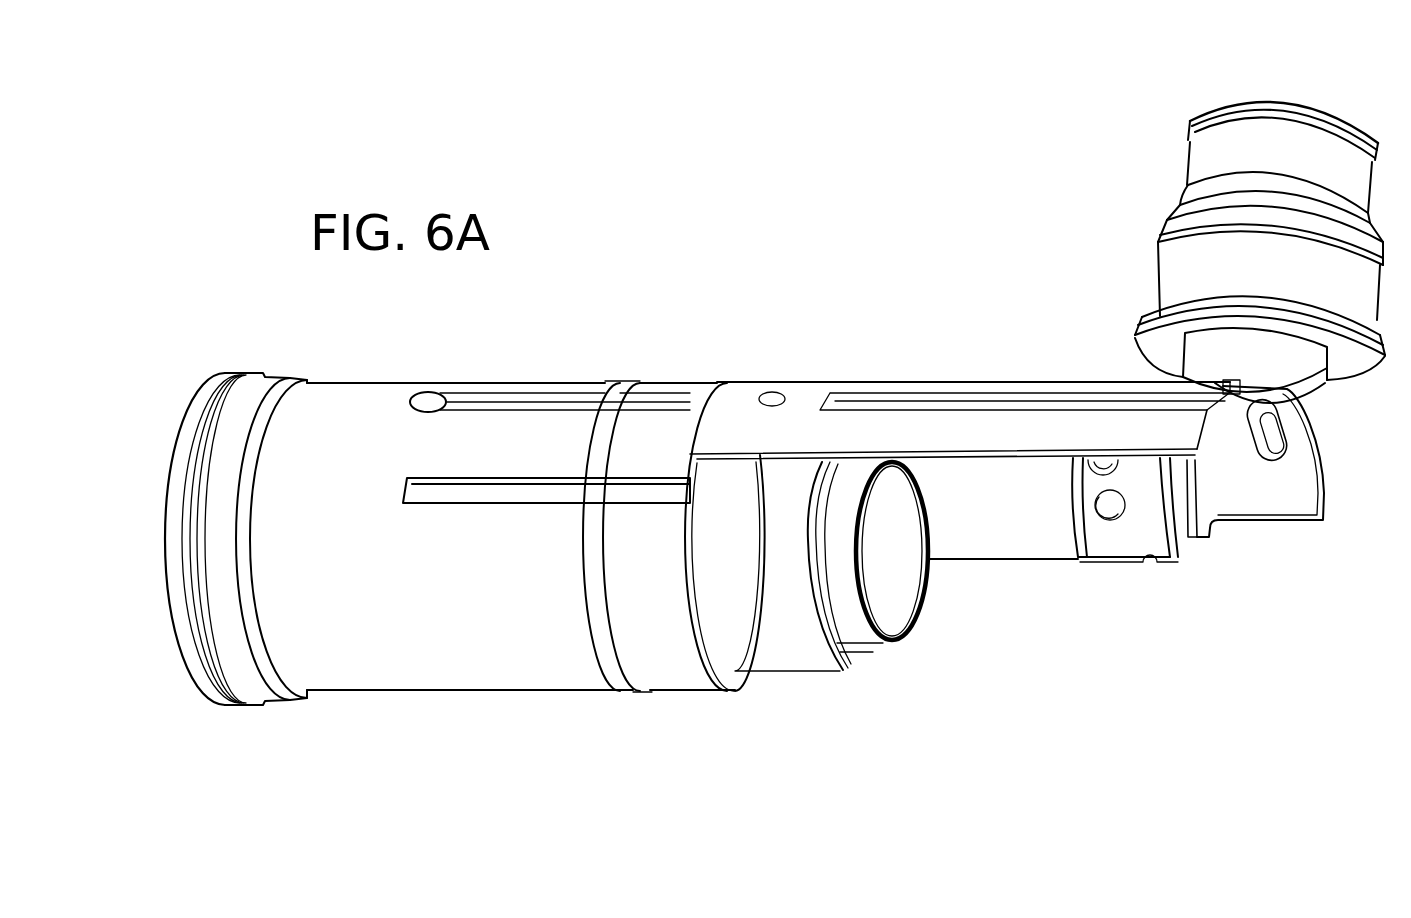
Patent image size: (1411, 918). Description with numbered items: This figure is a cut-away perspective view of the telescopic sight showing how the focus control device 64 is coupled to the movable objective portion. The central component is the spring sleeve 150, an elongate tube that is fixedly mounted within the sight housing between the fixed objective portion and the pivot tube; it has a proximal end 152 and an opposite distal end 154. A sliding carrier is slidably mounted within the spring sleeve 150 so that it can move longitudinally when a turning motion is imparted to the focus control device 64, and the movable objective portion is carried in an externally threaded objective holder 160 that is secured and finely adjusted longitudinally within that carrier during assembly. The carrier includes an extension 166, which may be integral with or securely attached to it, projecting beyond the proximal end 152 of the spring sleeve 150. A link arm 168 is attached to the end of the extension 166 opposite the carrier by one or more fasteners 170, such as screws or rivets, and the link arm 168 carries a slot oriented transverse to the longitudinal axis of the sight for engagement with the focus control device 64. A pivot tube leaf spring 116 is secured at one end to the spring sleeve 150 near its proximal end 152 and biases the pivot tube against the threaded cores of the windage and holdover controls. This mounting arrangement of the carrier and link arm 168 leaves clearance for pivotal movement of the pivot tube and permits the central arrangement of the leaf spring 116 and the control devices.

The focus control device 64 is at (1354, 93).
The pivot tube leaf spring 116 is at (803, 398).
The spring sleeve 150 is at (500, 670).
The proximal end 152 is at (891, 605).
The distal end 154 is at (175, 418).
The objective holder 160 is at (867, 637).
The extension 166 is at (1006, 540).
The link arm 168 is at (1290, 484).
The fastener 170 is at (1276, 440).